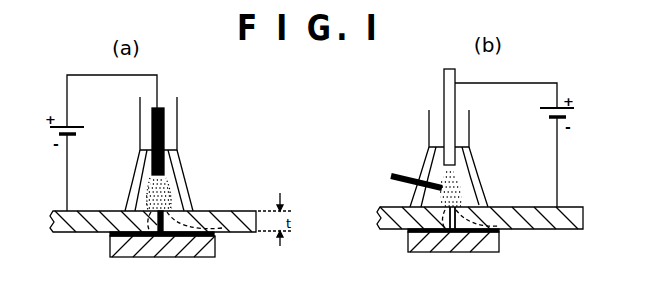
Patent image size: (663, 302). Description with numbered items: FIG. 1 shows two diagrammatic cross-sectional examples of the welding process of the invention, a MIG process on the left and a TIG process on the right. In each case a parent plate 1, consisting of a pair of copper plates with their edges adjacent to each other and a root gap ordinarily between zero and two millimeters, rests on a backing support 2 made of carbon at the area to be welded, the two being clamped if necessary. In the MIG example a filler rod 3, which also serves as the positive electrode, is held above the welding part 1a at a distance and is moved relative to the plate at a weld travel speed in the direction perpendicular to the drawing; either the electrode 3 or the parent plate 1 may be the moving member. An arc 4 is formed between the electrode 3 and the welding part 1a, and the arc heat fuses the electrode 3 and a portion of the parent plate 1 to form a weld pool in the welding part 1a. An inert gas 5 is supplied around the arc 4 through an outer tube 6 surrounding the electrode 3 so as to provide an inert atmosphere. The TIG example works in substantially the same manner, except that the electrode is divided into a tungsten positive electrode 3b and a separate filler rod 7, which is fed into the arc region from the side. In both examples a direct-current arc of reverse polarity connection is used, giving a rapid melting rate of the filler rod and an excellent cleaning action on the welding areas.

The parent plate 1 is at (96, 211).
The welding part 1a is at (215, 228).
The backing support 2 is at (114, 258).
The filler rod 3 is at (152, 160).
The tungsten positive electrode 3b is at (444, 162).
The arc 4 is at (168, 196).
The inert gas 5 is at (188, 165).
The nozzle 6 is at (178, 108).
The filler rod 7 is at (400, 182).